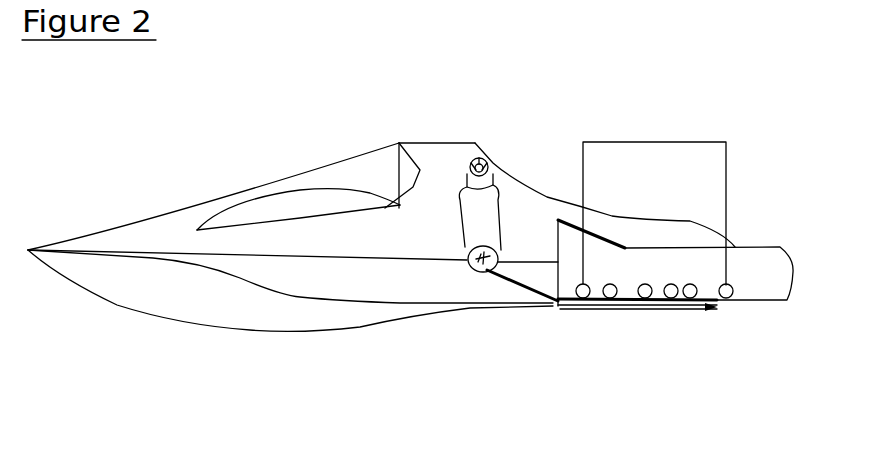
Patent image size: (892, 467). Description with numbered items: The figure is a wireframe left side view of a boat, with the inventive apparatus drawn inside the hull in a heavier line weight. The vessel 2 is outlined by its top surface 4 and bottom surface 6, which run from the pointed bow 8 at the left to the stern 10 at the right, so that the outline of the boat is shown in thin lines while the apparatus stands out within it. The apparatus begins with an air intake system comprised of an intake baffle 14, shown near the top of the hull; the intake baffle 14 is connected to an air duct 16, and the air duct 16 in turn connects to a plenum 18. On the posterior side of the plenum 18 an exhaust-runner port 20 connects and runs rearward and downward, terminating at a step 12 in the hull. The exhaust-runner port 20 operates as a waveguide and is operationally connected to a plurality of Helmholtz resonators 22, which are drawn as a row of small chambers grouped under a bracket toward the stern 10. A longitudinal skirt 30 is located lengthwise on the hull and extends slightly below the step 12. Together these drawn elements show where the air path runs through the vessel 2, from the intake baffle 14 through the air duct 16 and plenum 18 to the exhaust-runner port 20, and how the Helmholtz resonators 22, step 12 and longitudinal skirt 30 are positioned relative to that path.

The vessel 2 is at (399, 138).
The top surface 4 is at (206, 199).
The bottom surface 6 is at (127, 308).
The bow 8 is at (40, 240).
The stern 10 is at (792, 263).
The step 12 is at (560, 308).
The intake baffle 14 is at (486, 160).
The air duct 16 is at (498, 259).
The plenum 18 is at (500, 262).
The exhaust-runner port 20 is at (517, 290).
The Helmholtz resonators 22 is at (654, 208).
The longitudinal skirt 30 is at (712, 308).